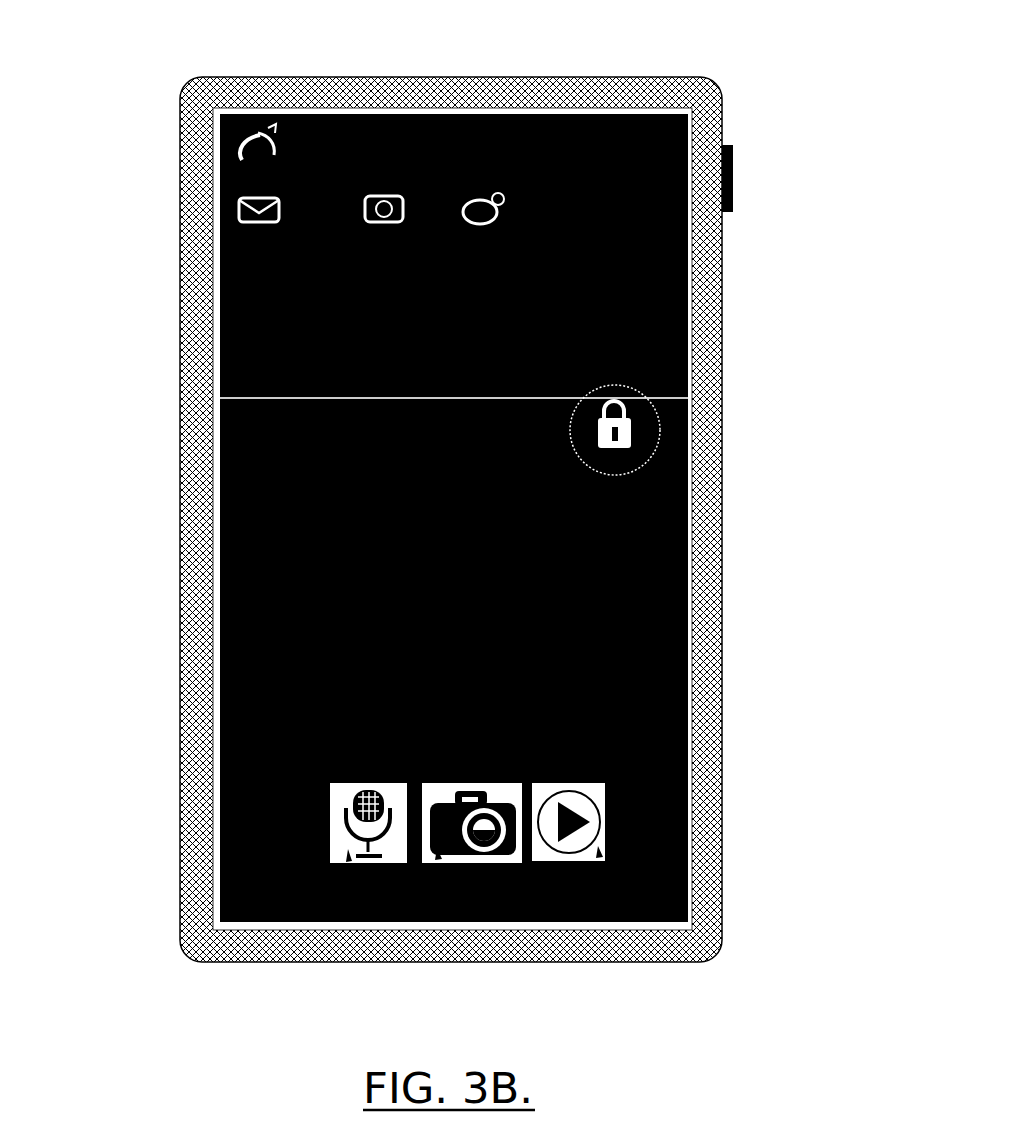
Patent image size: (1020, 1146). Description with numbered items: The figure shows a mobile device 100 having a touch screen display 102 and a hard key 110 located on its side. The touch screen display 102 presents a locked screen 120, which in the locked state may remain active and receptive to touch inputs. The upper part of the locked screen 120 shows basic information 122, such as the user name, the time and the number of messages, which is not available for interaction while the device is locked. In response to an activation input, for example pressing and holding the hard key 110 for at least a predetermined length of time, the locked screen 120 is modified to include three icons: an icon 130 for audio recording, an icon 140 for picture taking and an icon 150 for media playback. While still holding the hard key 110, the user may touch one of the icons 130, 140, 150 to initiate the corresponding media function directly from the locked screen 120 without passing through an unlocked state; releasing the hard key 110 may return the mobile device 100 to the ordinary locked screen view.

The mobile device 100 is at (454, 506).
The touch screen display 102 is at (213, 232).
The hard key 110 is at (737, 186).
The locked screen 120 is at (510, 506).
The basic information 122 is at (380, 113).
The icon for audio recording 130 is at (350, 850).
The icon for picture taking 140 is at (458, 920).
The icon for media playback 150 is at (607, 920).